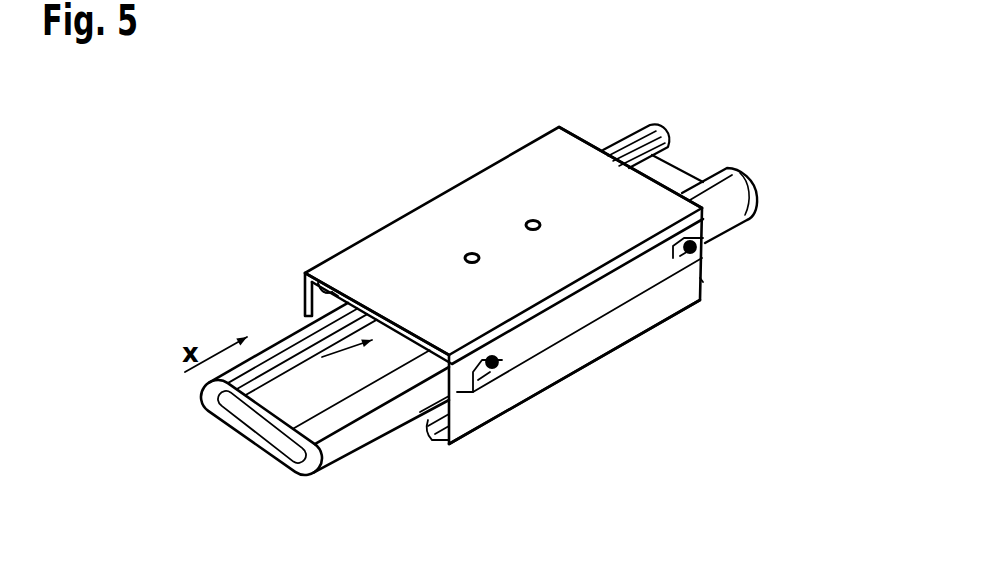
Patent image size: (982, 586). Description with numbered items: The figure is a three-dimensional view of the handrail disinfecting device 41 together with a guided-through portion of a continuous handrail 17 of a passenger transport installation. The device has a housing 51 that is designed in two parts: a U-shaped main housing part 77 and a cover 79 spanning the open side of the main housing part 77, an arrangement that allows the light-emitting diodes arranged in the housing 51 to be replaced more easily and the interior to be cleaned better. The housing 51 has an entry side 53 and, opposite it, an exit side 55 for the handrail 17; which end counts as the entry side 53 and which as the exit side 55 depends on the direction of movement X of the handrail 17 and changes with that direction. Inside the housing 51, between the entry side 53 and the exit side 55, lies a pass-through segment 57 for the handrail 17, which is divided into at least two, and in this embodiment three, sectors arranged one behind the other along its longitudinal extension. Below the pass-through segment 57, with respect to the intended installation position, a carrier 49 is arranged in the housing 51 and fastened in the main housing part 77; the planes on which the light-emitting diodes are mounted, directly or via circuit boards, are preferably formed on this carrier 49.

The handrail 17 is at (742, 205).
The handrail disinfecting device 41 is at (423, 167).
The carrier 49 is at (440, 430).
The housing 51 is at (357, 233).
The entry side 53 is at (343, 287).
The exit side 55 is at (598, 140).
The pass-through segment 57 is at (305, 352).
The main housing part 77 is at (567, 352).
The cover 79 is at (515, 178).